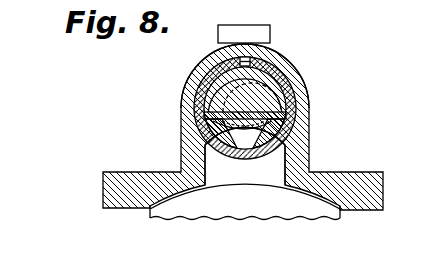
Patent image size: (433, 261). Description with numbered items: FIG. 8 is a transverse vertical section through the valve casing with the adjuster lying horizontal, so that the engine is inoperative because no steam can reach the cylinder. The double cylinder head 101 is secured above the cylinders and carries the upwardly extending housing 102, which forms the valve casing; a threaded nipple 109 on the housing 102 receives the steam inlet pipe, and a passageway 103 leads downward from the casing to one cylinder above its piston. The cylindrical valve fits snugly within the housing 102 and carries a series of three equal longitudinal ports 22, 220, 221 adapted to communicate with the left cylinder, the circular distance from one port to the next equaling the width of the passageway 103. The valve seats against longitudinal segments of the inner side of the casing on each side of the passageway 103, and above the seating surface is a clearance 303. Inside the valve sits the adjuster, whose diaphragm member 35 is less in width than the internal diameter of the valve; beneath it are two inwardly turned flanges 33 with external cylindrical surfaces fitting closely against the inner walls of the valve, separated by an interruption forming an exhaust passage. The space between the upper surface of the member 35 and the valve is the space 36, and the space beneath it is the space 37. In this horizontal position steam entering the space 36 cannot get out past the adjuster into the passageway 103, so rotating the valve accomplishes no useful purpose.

The double cylinder head 101 is at (131, 171).
The housing 102 is at (197, 63).
The clearance 303 is at (295, 83).
The threaded nipple 109 is at (262, 25).
The space above the member 36 is at (191, 84).
The port 22 is at (250, 60).
The space beneath the member 37 is at (203, 116).
The port 220 is at (212, 128).
The port 221 is at (283, 131).
The inwardly turned flanges 33 is at (242, 134).
The member 35 is at (249, 116).
The passageway 103 is at (245, 165).